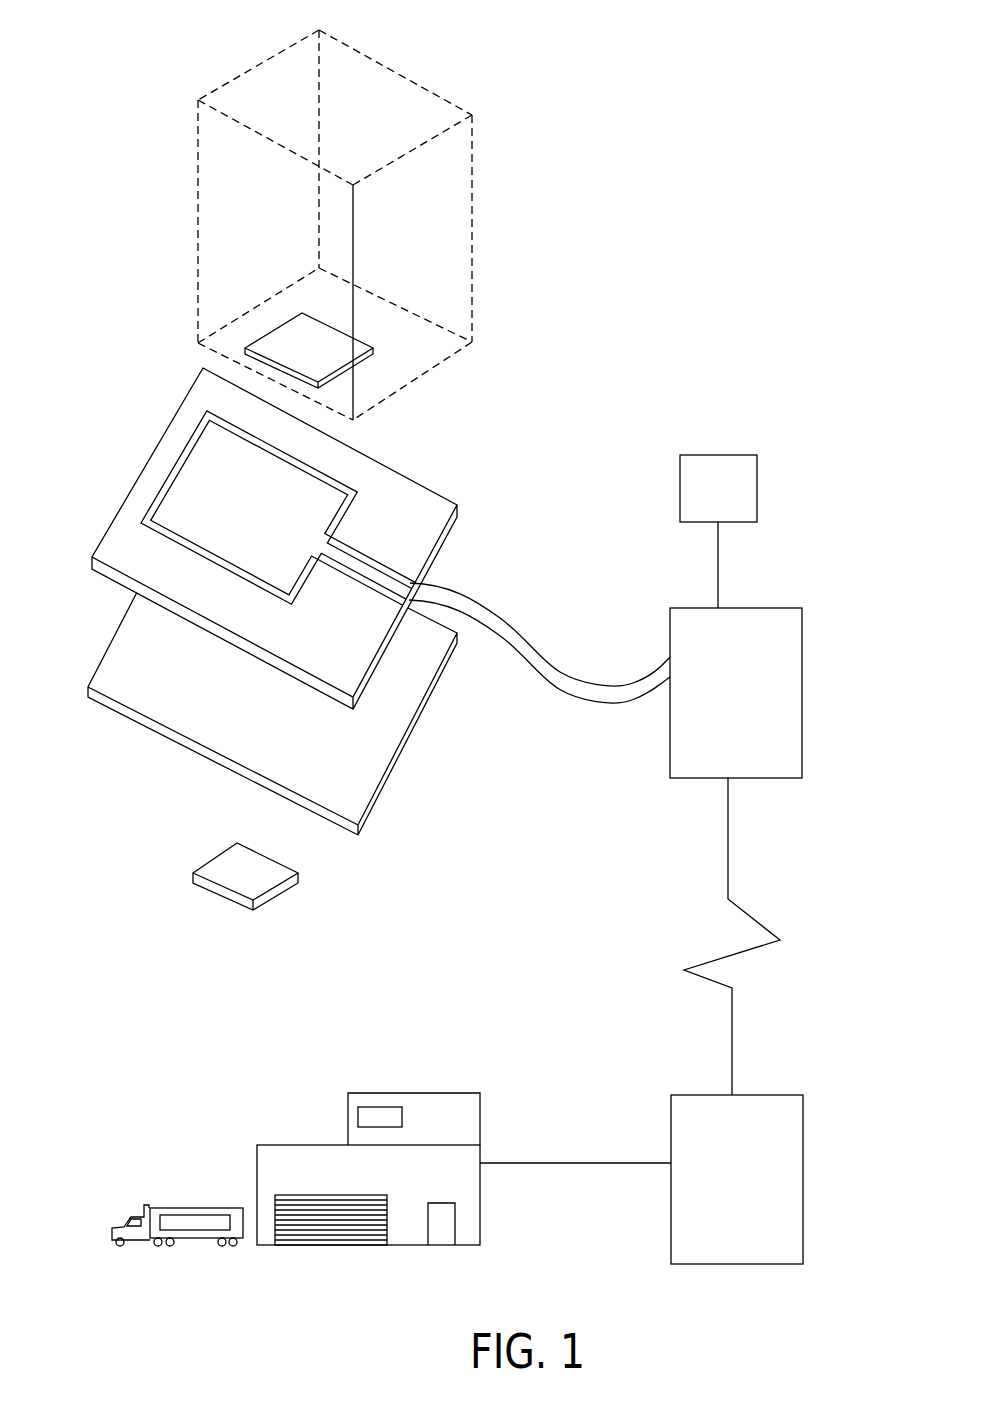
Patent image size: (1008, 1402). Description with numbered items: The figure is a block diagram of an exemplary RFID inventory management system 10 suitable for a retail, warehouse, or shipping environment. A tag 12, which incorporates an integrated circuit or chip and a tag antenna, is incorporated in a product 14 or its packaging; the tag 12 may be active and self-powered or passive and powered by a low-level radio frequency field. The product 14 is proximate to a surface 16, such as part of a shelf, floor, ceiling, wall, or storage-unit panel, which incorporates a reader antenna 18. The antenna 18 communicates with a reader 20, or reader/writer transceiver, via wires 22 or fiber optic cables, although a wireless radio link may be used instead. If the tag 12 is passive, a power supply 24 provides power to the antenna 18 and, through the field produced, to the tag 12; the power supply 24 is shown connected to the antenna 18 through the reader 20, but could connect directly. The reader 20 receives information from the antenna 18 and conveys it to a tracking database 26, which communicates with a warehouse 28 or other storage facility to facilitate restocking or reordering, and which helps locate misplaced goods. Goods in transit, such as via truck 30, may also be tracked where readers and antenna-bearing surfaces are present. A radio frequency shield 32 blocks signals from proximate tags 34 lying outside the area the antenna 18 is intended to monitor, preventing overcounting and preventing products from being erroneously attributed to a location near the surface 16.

The RFID inventory management system 10 is at (757, 337).
The tag 12 is at (305, 332).
The product 14 is at (473, 170).
The surface 16 is at (108, 530).
The reader antenna 18 is at (332, 478).
The reader 20 is at (802, 643).
The wires 22 is at (522, 635).
The power supply 24 is at (758, 507).
The tracking database 26 is at (803, 1149).
The warehouse 28 is at (408, 1093).
The truck 30 is at (197, 1207).
The RF shield 32 is at (370, 813).
The proximate tag 34 is at (275, 898).